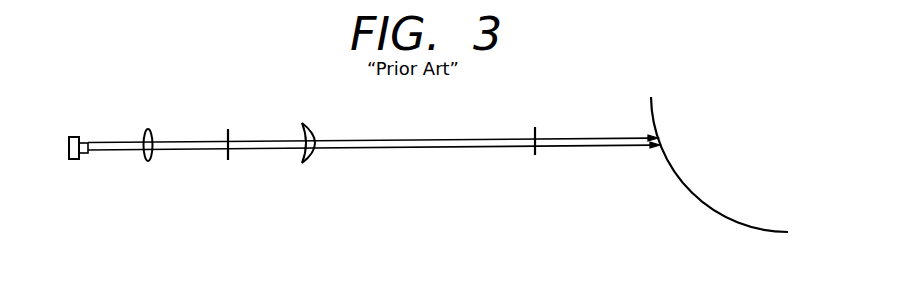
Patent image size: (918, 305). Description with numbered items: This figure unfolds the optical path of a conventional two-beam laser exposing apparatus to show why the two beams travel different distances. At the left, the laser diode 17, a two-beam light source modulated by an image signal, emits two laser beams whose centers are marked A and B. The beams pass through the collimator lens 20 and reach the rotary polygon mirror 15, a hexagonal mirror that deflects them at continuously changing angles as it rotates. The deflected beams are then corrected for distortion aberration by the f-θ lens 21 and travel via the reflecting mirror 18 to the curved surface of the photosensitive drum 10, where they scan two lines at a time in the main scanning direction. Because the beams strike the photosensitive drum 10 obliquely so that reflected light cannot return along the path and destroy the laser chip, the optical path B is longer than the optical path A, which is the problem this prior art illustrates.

The photosensitive drum 10 is at (692, 192).
The rotary polygon mirror 15 is at (226, 162).
The laser diode 17 is at (71, 159).
The reflecting mirror 18 is at (535, 157).
The collimator lens 20 is at (147, 162).
The f-θ lens 21 is at (303, 165).
The center of first beam A is at (455, 142).
The center of second beam B is at (455, 147).